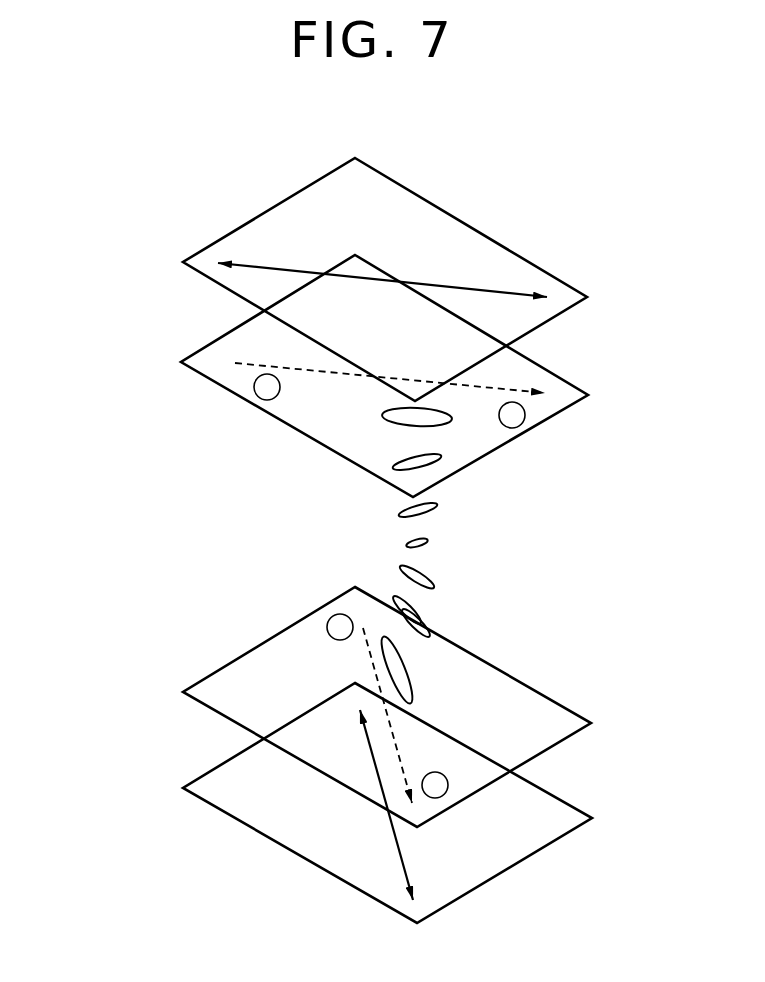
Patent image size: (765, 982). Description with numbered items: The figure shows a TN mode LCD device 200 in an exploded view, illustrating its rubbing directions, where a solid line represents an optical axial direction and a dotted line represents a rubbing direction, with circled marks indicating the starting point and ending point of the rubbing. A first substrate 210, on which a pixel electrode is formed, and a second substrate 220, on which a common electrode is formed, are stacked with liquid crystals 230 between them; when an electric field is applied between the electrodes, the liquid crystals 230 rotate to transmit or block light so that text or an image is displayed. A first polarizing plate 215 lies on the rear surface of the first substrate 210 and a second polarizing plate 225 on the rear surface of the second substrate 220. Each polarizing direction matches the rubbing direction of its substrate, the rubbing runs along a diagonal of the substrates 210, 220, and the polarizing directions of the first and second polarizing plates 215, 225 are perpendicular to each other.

The display device / liquid crystal display panel 200 is at (150, 203).
The first polarizing plate 215 is at (458, 232).
The first substrate 210 is at (552, 382).
The liquid crystals 230 is at (430, 541).
The second substrate 220 is at (552, 712).
The second polarizing plate 225 is at (552, 807).